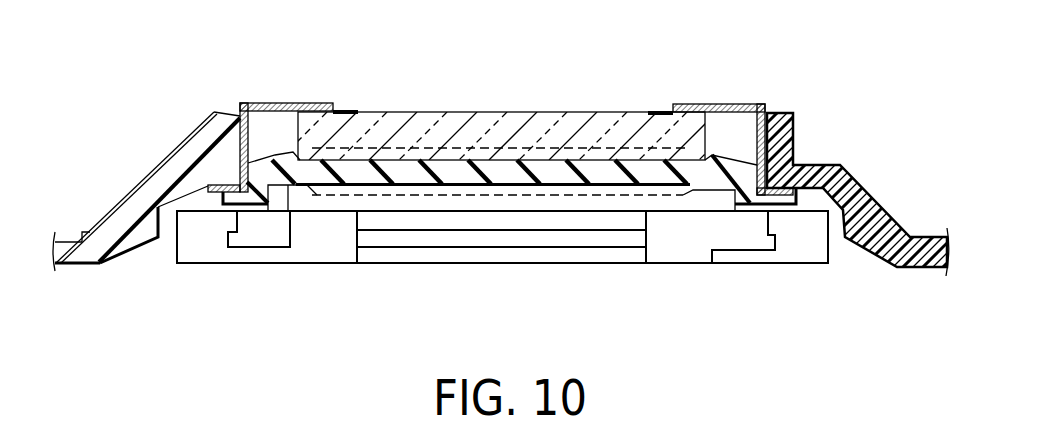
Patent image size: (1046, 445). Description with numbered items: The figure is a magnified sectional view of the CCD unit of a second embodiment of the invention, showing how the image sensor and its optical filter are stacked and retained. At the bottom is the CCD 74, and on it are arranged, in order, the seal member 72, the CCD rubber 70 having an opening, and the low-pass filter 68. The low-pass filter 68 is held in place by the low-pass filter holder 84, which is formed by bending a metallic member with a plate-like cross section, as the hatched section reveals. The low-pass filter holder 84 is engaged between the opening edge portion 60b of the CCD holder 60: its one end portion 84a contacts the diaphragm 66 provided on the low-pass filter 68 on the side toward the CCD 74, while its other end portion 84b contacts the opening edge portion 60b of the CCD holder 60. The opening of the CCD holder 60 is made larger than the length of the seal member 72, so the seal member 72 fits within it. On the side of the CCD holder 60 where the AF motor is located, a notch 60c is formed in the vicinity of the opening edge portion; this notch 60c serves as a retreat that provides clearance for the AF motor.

The CCD holder 60 is at (110, 209).
The opening edge portion 60b is at (224, 122).
The notch 60c is at (825, 165).
The diaphragm 66 is at (345, 107).
The low-pass filter 68 is at (425, 117).
The CCD rubber 70 is at (287, 190).
The seal member 72 is at (702, 203).
The CCD 74 is at (343, 252).
The low-pass filter holder 84 is at (678, 105).
The one end portion 84a is at (288, 100).
The other end portion 84b is at (221, 193).